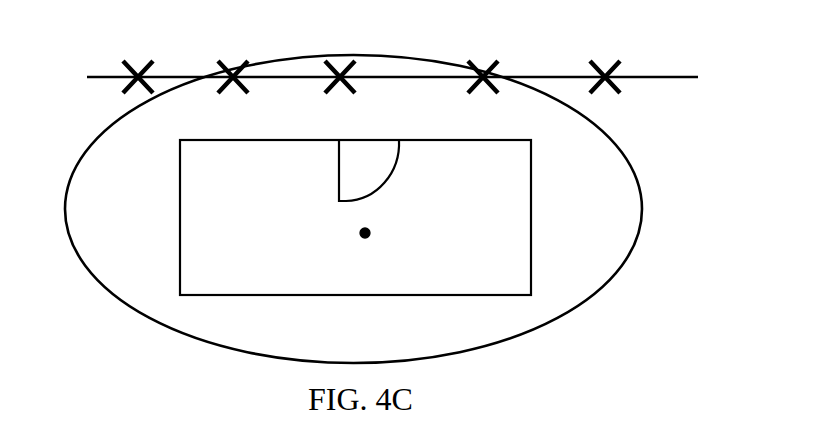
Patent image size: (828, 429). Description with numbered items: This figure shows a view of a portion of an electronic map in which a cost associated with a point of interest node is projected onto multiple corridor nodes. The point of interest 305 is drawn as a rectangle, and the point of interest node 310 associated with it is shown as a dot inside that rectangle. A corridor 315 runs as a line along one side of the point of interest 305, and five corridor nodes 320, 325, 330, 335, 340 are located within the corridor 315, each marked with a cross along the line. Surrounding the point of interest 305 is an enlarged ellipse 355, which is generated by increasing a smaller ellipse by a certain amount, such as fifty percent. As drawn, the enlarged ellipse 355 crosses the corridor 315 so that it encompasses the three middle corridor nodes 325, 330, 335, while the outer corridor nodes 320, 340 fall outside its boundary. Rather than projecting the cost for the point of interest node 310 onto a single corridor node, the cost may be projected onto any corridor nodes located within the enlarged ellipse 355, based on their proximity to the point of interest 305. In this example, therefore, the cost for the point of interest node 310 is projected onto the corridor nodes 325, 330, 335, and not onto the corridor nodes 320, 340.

The point of interest 305 is at (531, 225).
The point of interest node 310 is at (368, 238).
The corridor 315 is at (668, 77).
The corridor node 320 is at (128, 60).
The corridor node 325 is at (222, 60).
The corridor node 330 is at (328, 60).
The corridor node 335 is at (471, 60).
The corridor node 340 is at (594, 60).
The enlarged ellipse 355 is at (633, 168).